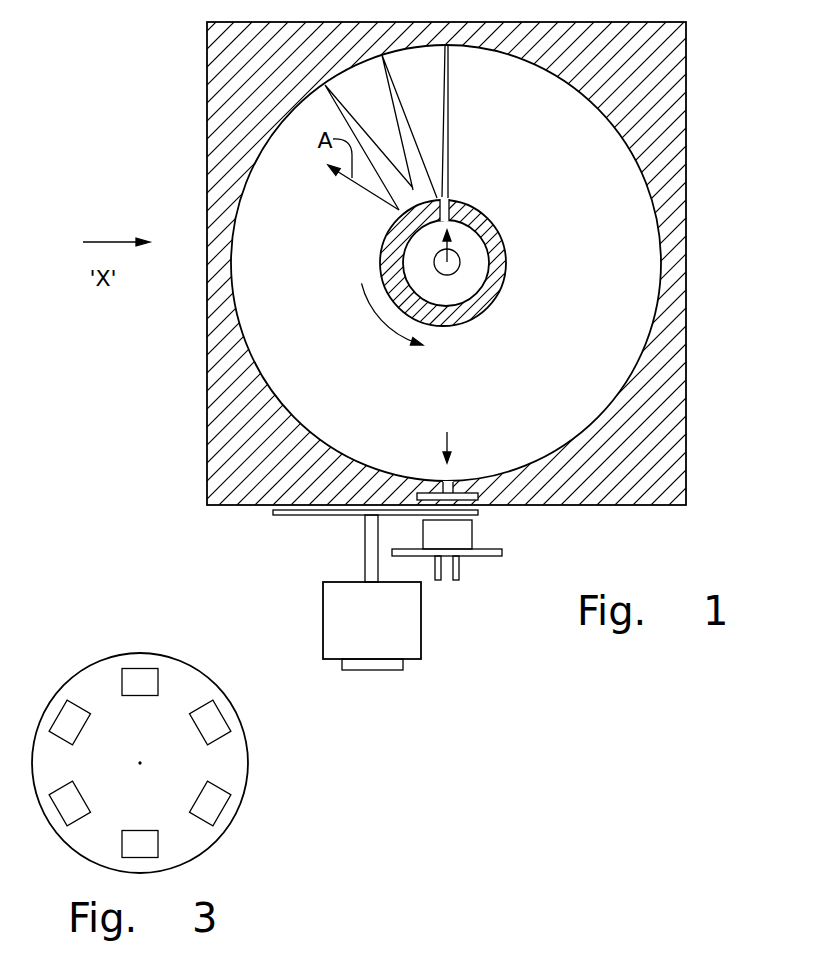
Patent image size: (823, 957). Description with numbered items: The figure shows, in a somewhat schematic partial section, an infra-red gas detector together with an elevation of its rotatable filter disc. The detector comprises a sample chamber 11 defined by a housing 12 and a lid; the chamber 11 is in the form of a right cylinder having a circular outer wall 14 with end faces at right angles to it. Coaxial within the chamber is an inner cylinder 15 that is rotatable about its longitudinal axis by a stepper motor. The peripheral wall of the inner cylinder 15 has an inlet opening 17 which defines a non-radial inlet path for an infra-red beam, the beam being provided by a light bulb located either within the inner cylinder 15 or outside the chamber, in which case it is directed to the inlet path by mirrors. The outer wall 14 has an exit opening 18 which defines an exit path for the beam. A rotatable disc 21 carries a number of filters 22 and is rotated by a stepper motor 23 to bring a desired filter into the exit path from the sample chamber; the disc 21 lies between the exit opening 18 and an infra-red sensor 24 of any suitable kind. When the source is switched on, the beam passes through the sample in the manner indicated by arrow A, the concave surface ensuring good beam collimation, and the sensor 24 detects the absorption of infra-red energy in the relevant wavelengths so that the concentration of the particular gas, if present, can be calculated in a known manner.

In FIG. 1, the sample chamber 11 is at (567, 259).
In FIG. 1, the housing 12 is at (675, 95).
In FIG. 1, the circular outer wall 14 is at (248, 335).
In FIG. 1, the inner cylinder 15 is at (492, 228).
In FIG. 1, the inlet opening 17 is at (450, 198).
In FIG. 1, the exit opening 18 is at (454, 481).
In FIG. 1, the rotatable disc 21 is at (287, 517).
In FIG. 3, the rotatable disc 21 is at (98, 672).
In FIG. 3, the filters 22 is at (148, 688).
In FIG. 1, the stepper motor 23 is at (361, 632).
In FIG. 1, the infra-red sensor 24 is at (465, 537).